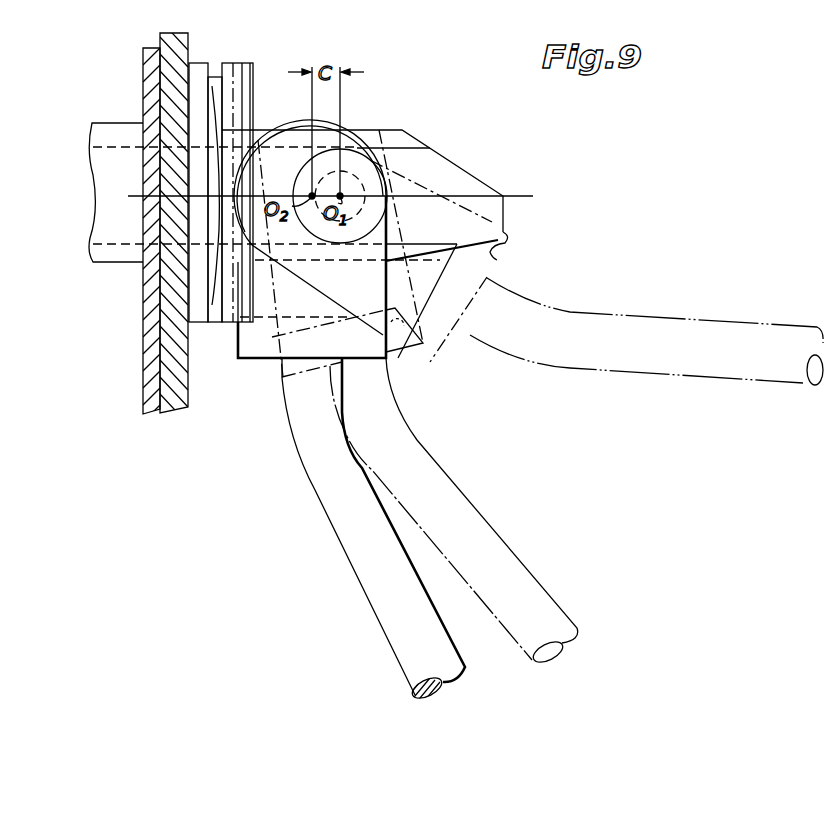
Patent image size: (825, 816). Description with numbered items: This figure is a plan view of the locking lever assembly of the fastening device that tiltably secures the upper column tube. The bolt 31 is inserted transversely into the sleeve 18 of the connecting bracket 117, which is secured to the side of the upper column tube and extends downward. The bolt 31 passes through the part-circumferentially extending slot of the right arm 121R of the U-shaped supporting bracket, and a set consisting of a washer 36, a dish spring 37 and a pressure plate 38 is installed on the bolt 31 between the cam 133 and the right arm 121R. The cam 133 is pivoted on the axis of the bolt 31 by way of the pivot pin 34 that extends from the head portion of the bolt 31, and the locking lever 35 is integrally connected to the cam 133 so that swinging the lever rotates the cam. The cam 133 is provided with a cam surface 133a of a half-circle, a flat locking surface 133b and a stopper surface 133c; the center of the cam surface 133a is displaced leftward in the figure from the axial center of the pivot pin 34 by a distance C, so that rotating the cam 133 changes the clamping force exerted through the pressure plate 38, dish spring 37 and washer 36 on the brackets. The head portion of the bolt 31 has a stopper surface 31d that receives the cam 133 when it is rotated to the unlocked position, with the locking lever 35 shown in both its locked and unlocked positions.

The sleeve 18 is at (117, 128).
The connecting bracket 117 is at (142, 323).
The right arm of supporting bracket 121R is at (176, 383).
The washer 36 is at (198, 68).
The dish spring 37 is at (207, 306).
The pressure plate 38 is at (228, 74).
The cam 133 is at (262, 352).
The cam surface 133a is at (278, 129).
The flat locking surface 133b is at (235, 290).
The stopper surface 133c is at (401, 346).
The pivot pin 34 is at (357, 161).
The bolt 31 is at (455, 176).
The stopper surface 31d is at (498, 246).
The locking lever 35 is at (338, 518).